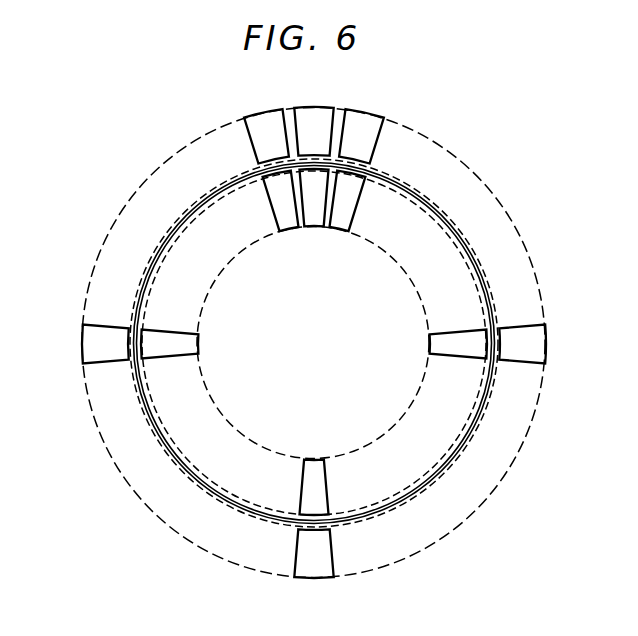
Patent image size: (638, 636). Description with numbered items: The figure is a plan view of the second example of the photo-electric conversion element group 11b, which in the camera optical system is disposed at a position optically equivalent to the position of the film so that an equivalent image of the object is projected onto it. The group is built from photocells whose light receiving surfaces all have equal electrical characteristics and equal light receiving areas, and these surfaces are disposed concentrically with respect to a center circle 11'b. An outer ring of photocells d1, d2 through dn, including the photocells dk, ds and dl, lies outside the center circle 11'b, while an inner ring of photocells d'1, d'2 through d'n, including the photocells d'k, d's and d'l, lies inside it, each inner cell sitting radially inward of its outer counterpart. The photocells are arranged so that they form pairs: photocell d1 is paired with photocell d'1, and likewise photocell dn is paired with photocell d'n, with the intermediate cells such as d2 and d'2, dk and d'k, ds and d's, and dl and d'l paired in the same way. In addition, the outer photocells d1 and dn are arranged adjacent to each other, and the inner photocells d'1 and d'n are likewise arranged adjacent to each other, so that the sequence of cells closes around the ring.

The photo-electric conversion element group 11b is at (483, 167).
The center circle 11'b is at (350, 343).
The photocell d1 is at (313, 113).
The photocell d2 is at (263, 123).
The photocell dn is at (361, 118).
The photocell dk is at (93, 342).
The photocell ds is at (535, 345).
The photocell dl is at (318, 567).
The photocell d'1 is at (312, 221).
The photocell d'2 is at (274, 224).
The photocell d'n is at (349, 222).
The photocell d'k is at (193, 336).
The photocell d's is at (431, 337).
The photocell d'l is at (315, 466).